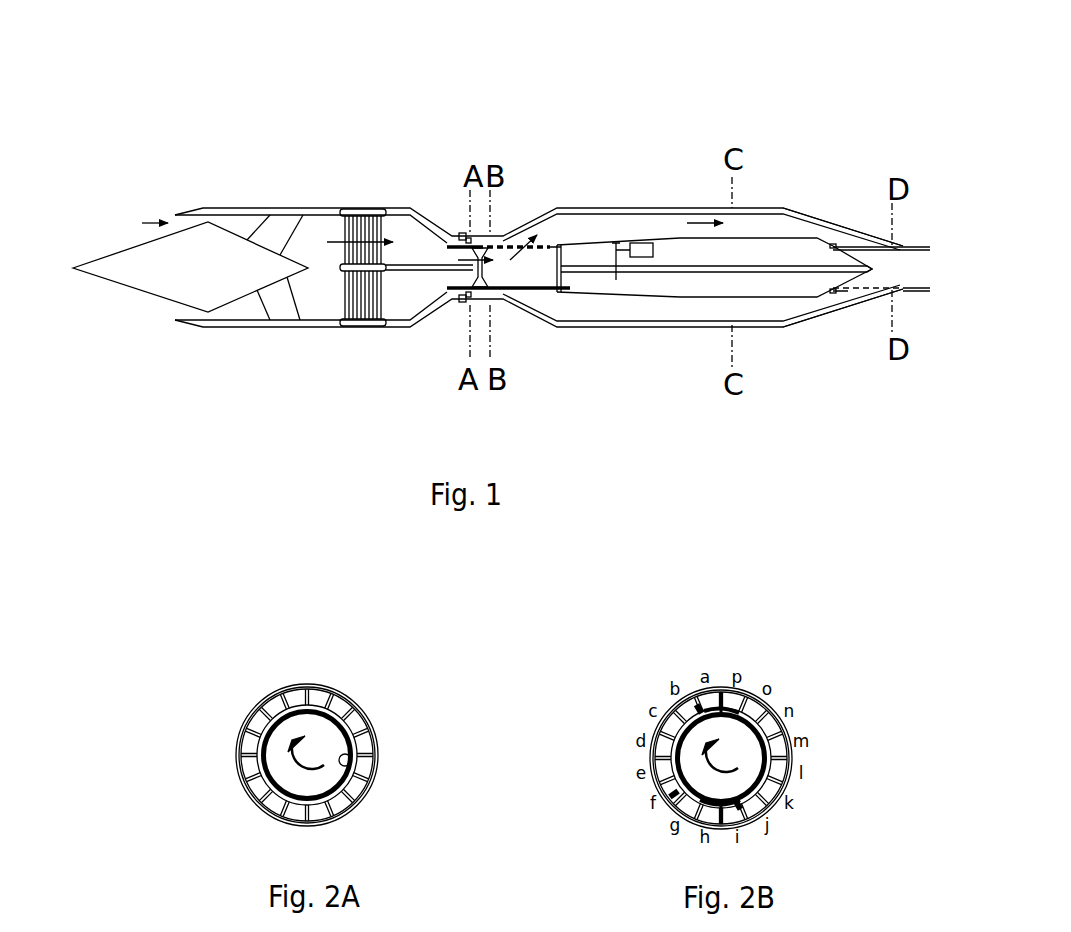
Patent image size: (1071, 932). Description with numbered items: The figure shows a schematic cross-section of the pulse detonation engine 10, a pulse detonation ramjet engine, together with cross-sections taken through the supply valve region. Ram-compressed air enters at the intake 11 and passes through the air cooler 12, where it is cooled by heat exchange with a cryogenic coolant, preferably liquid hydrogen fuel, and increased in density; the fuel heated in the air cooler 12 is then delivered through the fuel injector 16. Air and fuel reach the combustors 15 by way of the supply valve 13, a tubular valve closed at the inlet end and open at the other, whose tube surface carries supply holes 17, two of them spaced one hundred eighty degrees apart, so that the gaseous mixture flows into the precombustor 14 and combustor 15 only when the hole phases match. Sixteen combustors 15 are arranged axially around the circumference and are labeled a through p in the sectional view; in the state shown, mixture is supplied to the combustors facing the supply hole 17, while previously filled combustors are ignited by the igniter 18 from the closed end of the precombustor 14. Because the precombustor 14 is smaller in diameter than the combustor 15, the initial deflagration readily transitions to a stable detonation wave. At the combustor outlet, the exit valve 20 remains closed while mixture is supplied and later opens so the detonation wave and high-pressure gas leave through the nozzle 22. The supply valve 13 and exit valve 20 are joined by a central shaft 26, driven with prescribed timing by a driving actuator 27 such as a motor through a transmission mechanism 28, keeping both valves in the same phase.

In FIG. 1, the pulse detonation engine 10 is at (302, 178).
In FIG. 1, the intake 11 is at (175, 290).
In FIG. 1, the air cooler 12 is at (345, 307).
In FIG. 1, the supply valve 13 is at (493, 290).
In FIG. 2A, the supply valve 13 is at (350, 758).
In FIG. 2B, the supply valve 13 is at (667, 797).
In FIG. 1, the precombustor 14 is at (502, 237).
In FIG. 2A, the precombustor 14 is at (327, 685).
In FIG. 2B, the precombustor 14 is at (780, 768).
In FIG. 1, the combustor 15 is at (595, 225).
In FIG. 1, the fuel injector 16 is at (462, 236).
In FIG. 2B, the supply hole 17 is at (708, 722).
In FIG. 1, the igniter 18 is at (467, 233).
In FIG. 1, the exit valve 20 is at (862, 245).
In FIG. 1, the nozzle 22 is at (922, 257).
In FIG. 1, the central shaft 26 is at (760, 268).
In FIG. 1, the driving actuator 27 is at (637, 243).
In FIG. 1, the transmission mechanism 28 is at (622, 258).